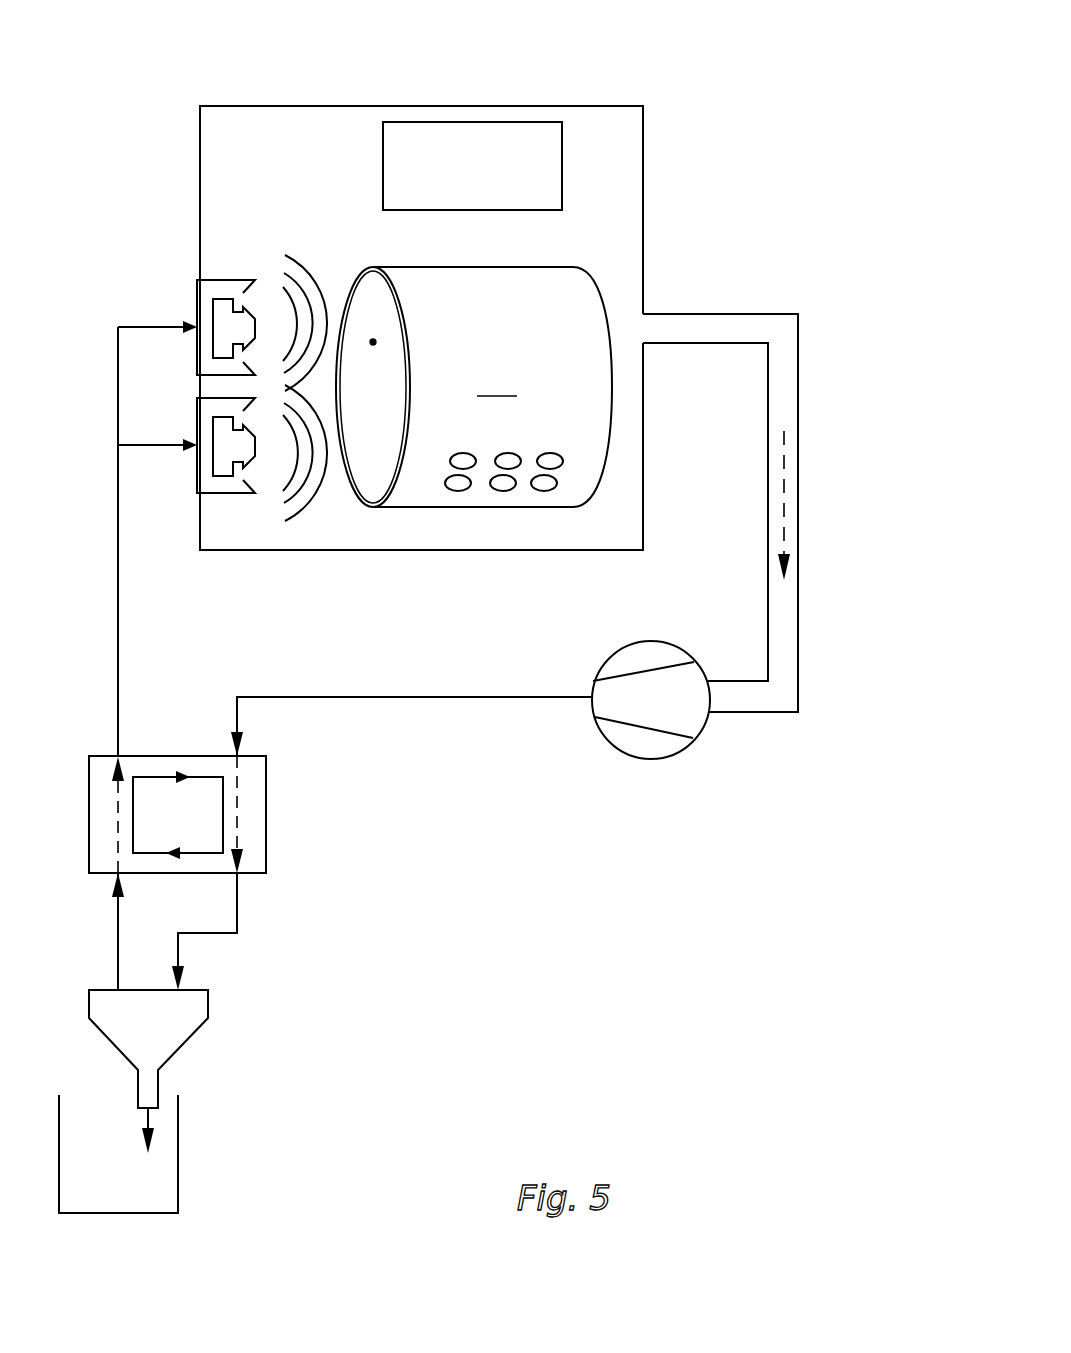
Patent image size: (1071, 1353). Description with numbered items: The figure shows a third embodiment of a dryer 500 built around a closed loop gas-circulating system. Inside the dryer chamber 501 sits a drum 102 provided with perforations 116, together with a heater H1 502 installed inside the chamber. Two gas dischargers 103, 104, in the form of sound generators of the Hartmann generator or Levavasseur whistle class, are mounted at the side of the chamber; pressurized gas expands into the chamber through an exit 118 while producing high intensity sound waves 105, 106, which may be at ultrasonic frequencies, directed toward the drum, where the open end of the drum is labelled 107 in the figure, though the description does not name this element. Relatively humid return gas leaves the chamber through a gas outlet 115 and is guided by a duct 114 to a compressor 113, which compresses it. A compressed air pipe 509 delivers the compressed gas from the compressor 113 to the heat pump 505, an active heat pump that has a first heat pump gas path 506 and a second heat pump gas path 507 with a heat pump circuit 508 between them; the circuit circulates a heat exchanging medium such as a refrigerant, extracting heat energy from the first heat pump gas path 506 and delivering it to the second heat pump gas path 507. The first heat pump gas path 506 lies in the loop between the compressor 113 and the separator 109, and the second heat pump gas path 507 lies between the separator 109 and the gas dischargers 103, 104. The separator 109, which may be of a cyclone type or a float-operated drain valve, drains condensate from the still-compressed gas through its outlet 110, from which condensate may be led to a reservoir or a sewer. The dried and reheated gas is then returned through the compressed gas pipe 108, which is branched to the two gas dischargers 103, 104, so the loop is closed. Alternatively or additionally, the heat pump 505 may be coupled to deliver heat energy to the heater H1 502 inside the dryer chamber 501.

The dryer 500 is at (800, 45).
The dryer chamber 501 is at (240, 106).
The heater H1 502 is at (451, 192).
The drum 102 is at (492, 387).
The gas discharger 103 is at (210, 280).
The gas discharger 104 is at (210, 493).
The high intensity sound waves 105 is at (320, 280).
The high intensity sound waves 106 is at (320, 495).
The focal point / nozzle 107 is at (375, 340).
The compressed gas pipe 108 is at (118, 520).
The separator 109 is at (208, 1005).
The outlet 110 is at (178, 1170).
The compressor 113 is at (632, 640).
The duct 114 is at (798, 607).
The gas outlet 115 is at (645, 343).
The perforations 116 is at (490, 448).
The exit 118 is at (258, 480).
The heat pump 505 is at (266, 770).
The first heat pump gas path 506 is at (237, 825).
The second heat pump gas path 507 is at (118, 818).
The heat pump circuit 508 is at (157, 842).
The compressed air pipe 509 is at (415, 697).